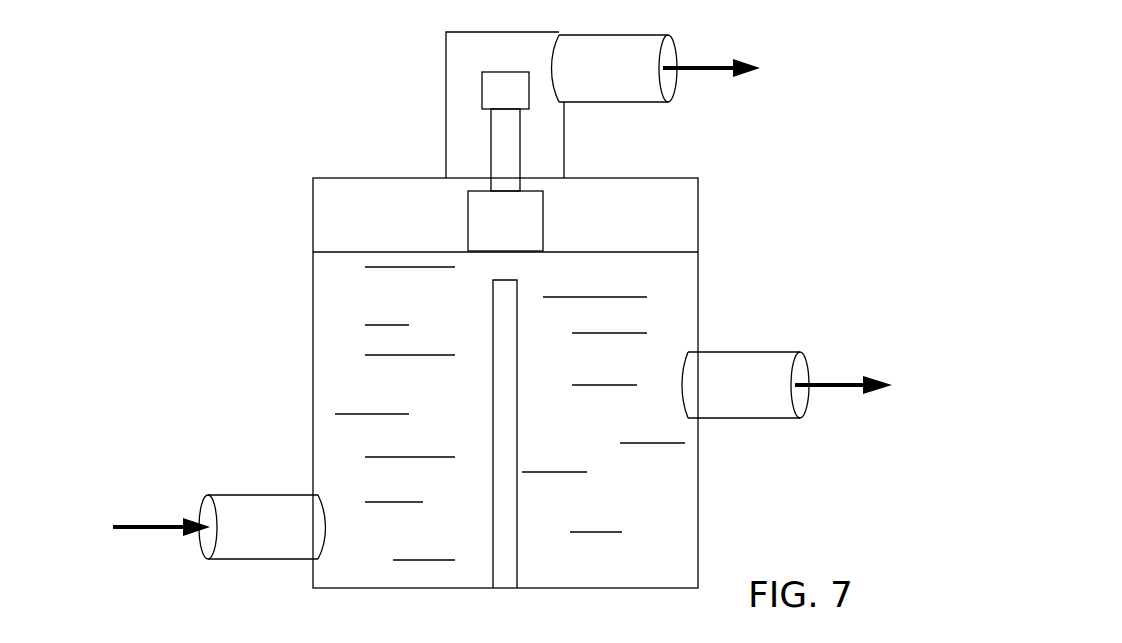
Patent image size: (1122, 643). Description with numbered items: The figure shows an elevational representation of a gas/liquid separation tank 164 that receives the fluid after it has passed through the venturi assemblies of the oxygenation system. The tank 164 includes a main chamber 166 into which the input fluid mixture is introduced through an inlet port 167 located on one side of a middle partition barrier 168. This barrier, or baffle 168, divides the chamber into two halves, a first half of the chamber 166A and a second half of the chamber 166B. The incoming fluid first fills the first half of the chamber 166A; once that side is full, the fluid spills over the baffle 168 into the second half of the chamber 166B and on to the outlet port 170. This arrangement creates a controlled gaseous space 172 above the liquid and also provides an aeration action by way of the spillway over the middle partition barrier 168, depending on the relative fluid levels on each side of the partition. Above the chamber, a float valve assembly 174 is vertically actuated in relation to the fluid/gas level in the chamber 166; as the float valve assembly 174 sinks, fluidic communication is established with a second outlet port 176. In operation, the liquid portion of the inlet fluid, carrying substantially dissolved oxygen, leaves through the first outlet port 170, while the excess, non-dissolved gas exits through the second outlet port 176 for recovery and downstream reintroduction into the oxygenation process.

The gas/liquid separation tank 164 is at (186, 231).
The main chamber 166 is at (312, 370).
The first half of the chamber 166A is at (395, 413).
The second half of the chamber 166B is at (603, 414).
The inlet port 167 is at (268, 505).
The middle partition barrier 168 is at (503, 550).
The outlet port 170 is at (730, 360).
The controlled gaseous space 172 is at (381, 198).
The float valve assembly 174 is at (502, 140).
The second outlet port 176 is at (608, 92).